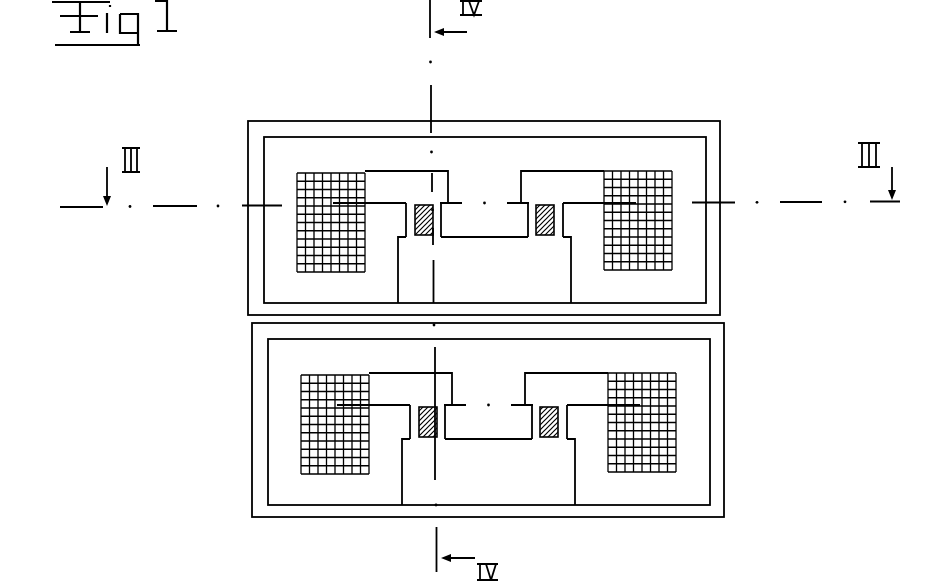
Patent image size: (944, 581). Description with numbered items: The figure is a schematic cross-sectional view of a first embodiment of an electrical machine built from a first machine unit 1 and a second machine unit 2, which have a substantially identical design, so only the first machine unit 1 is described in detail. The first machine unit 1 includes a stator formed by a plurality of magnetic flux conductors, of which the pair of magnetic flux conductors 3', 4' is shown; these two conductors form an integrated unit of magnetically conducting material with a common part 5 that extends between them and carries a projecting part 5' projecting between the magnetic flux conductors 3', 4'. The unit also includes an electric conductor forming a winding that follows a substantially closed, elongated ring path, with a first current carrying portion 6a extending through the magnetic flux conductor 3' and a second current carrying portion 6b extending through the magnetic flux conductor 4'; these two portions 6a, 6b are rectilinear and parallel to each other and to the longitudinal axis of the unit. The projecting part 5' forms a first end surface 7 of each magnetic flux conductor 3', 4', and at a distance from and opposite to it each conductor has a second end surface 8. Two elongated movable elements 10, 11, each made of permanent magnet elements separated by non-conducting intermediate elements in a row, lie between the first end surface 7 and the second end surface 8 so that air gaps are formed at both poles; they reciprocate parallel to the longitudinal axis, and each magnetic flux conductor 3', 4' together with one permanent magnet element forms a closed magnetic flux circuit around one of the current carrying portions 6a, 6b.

The first machine unit 1 is at (730, 134).
The second machine unit 2 is at (737, 497).
The magnetic flux conductor 3' is at (485, 316).
The magnetic flux conductor 4' is at (489, 317).
The common part 5 is at (486, 240).
The projecting part 5' is at (486, 363).
The first current carrying portion 6a is at (300, 240).
The second current carrying portion 6b is at (657, 233).
The first end surface 7 is at (440, 238).
The second end surface 8 is at (413, 238).
The movable element 10 is at (414, 175).
The movable element 11 is at (543, 175).